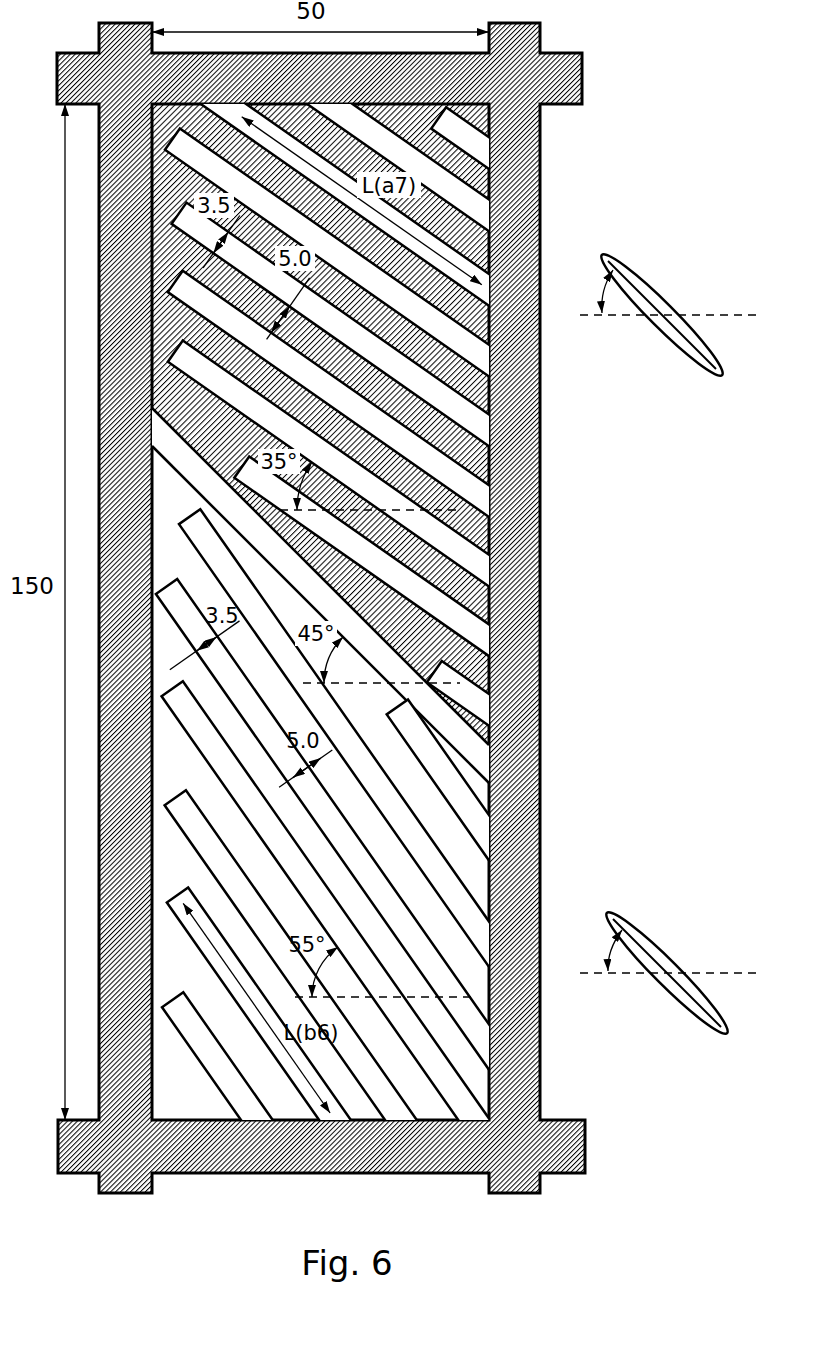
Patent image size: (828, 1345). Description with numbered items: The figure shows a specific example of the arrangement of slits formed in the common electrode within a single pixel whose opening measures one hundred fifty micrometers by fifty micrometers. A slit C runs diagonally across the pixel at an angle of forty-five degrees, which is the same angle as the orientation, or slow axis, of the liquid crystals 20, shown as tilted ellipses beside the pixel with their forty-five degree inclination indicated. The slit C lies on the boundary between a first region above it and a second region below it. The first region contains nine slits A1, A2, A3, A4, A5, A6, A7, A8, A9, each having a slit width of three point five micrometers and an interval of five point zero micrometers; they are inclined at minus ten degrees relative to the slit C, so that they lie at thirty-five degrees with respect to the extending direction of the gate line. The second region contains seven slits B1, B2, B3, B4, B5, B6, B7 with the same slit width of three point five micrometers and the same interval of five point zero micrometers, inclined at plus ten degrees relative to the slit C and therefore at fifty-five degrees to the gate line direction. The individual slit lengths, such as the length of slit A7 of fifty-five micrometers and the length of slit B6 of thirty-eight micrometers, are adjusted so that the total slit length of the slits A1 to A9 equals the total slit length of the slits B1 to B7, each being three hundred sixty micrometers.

The liquid crystals 20 is at (655, 297).
The slit C is at (338, 603).
The slit A1 is at (598, 786).
The slit A2 is at (487, 639).
The slit A3 is at (421, 522).
The slit A4 is at (421, 453).
The slit A5 is at (425, 385).
The slit A6 is at (418, 310).
The slit A7 is at (393, 222).
The slit A8 is at (428, 178).
The slit A9 is at (561, 203).
The slit B1 is at (569, 952).
The slit B2 is at (390, 803).
The slit B3 is at (367, 873).
The slit B4 is at (373, 975).
The slit B5 is at (376, 1067).
The slit B6 is at (378, 1116).
The slit B7 is at (373, 1168).